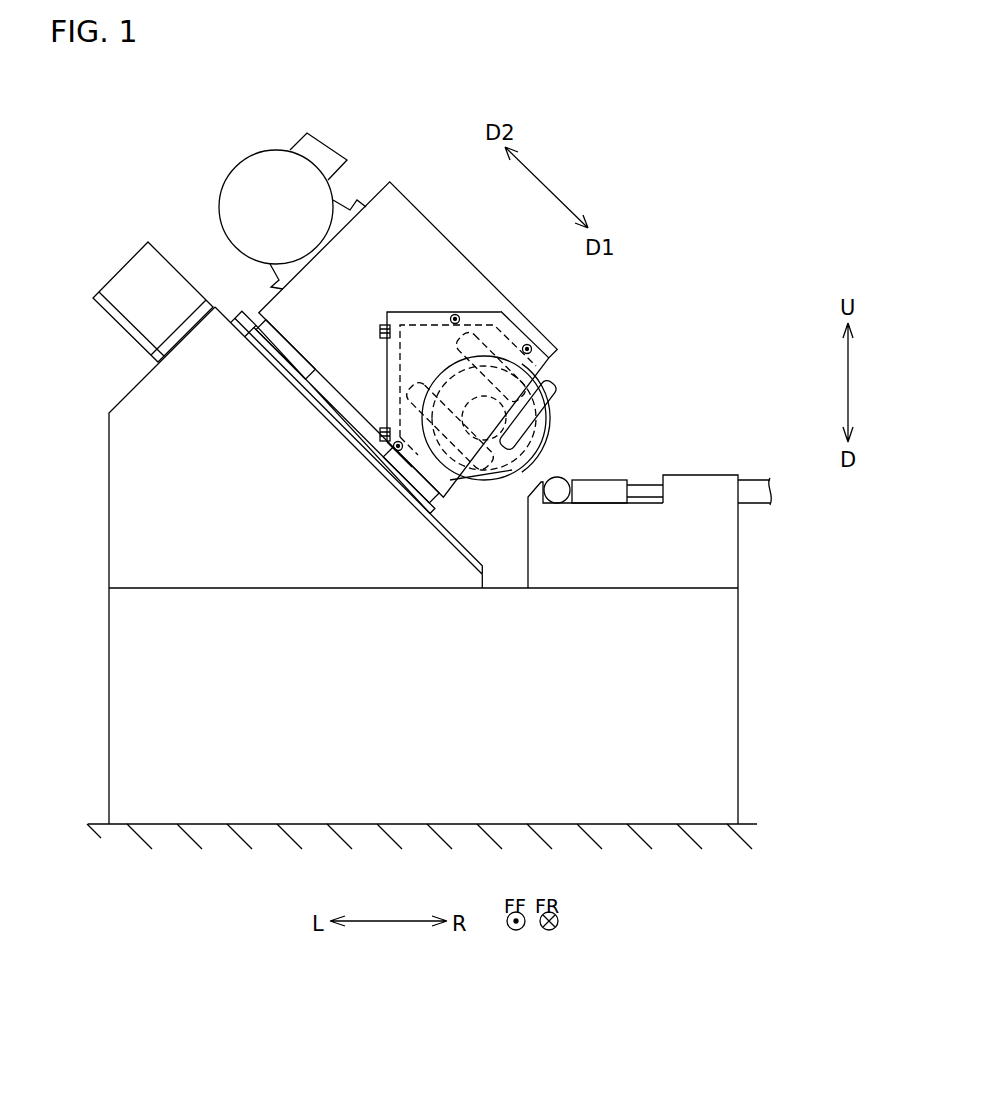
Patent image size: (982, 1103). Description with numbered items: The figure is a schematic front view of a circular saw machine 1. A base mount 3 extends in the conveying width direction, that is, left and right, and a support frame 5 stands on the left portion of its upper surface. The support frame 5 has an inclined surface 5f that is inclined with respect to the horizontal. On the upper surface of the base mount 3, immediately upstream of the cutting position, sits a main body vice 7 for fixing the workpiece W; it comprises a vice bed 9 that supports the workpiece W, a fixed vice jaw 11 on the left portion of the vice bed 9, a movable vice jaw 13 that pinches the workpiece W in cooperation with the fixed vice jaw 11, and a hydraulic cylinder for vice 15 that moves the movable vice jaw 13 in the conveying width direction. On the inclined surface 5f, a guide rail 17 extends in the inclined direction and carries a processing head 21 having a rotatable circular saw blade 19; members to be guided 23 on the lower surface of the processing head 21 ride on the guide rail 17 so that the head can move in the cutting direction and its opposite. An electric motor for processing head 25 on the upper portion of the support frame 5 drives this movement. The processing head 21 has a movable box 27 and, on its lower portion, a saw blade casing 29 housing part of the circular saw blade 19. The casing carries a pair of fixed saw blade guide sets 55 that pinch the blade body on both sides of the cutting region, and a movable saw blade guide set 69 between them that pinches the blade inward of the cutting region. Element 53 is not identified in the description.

The circular saw machine 1 is at (633, 226).
The base mount 3 is at (728, 668).
The support frame 5 is at (115, 517).
The inclined surface 5f is at (460, 545).
The main body vice 7 is at (690, 472).
The vice bed 9 is at (728, 543).
The fixed vice jaw 11 is at (531, 494).
The movable vice jaw 13 is at (605, 490).
The hydraulic cylinder for vice 15 is at (752, 483).
The guide rail 17 is at (347, 437).
The circular saw blade 19 is at (548, 386).
The processing head 21 is at (529, 318).
The member to be guided 23 is at (273, 353).
The electric motor for processing head 25 is at (133, 268).
The movable box 27 is at (410, 200).
The saw blade casing 29 is at (433, 318).
The motor 53 is at (263, 162).
The fixed saw blade guide set 55 is at (546, 415).
The movable saw blade guide set 69 is at (515, 470).
The workpiece W is at (557, 497).